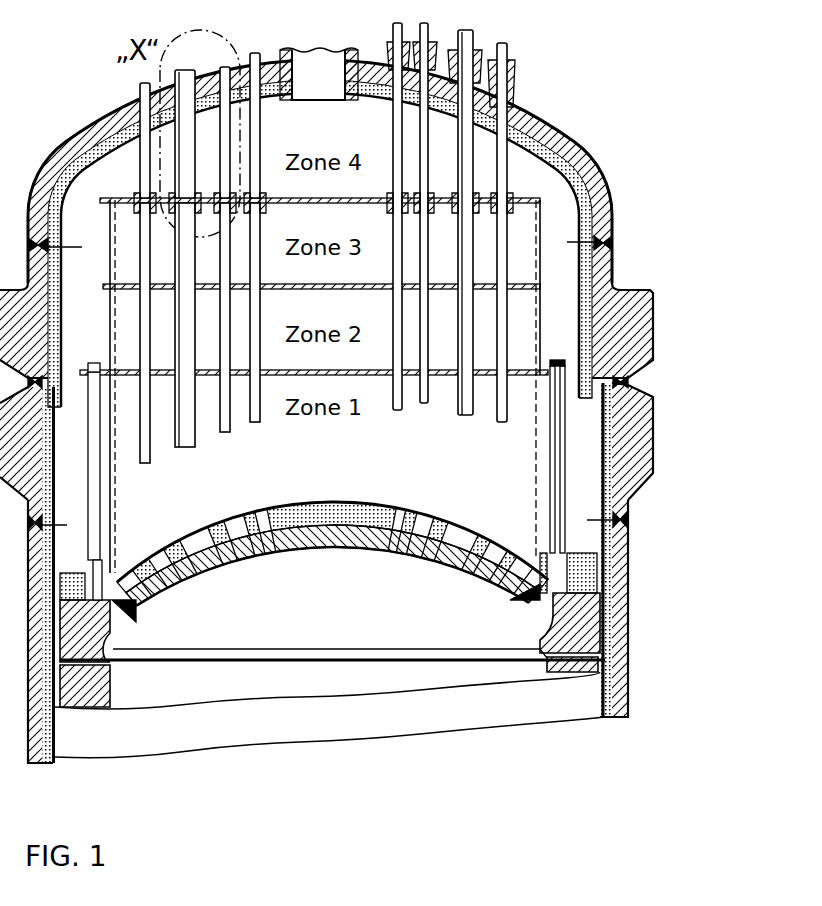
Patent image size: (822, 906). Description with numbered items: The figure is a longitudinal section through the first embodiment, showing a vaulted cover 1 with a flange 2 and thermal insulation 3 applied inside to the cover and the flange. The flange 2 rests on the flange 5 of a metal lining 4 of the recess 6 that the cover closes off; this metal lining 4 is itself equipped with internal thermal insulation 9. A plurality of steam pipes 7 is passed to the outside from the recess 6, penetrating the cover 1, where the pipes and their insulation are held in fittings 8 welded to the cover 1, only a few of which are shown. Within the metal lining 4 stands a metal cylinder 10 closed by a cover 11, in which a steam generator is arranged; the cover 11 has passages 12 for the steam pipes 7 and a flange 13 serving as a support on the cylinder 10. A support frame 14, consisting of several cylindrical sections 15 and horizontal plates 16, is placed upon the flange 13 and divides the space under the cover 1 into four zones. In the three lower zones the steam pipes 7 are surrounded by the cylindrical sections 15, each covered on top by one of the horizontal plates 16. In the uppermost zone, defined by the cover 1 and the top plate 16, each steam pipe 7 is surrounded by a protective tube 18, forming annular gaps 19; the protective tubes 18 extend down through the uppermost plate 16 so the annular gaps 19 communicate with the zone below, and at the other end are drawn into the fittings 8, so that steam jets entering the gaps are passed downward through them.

The vaulted cover 1 is at (602, 205).
The flange 2 is at (630, 295).
The thermal insulation 3 is at (528, 147).
The metal lining 4 is at (618, 547).
The flange 5 is at (628, 435).
The recess 6 is at (555, 695).
The steam pipes 7 is at (227, 432).
The fittings 8 is at (510, 77).
The thermal insulation 9 is at (610, 632).
The metal cylinder 10 is at (80, 683).
The cover 11 is at (300, 535).
The passages 12 is at (253, 537).
The flange 13 is at (85, 632).
The support frame 14 is at (537, 310).
The cylindrical sections 15 is at (612, 238).
The horizontal plates 16 is at (537, 238).
The protective tube 18 is at (175, 163).
The annular gaps 19 is at (497, 208).